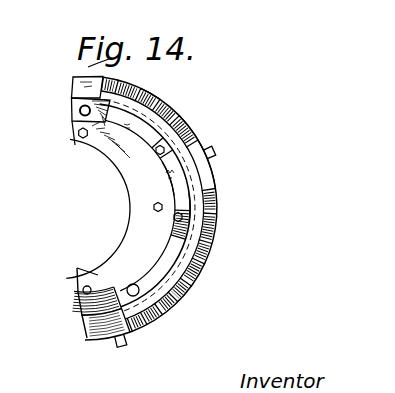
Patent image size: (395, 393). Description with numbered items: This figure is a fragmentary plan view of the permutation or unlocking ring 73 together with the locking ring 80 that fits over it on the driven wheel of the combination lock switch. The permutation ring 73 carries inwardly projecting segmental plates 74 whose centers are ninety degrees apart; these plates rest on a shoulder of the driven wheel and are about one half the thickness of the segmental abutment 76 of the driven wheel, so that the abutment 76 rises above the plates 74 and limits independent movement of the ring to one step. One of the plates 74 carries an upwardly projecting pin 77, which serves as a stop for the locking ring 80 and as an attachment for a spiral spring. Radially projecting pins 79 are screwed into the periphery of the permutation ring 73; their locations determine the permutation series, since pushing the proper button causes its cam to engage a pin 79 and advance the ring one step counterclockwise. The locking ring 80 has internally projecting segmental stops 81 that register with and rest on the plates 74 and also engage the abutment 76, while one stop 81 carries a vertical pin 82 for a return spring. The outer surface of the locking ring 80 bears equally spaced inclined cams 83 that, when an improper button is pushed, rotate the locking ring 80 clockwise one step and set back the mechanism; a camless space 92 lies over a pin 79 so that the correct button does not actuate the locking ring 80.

The permutation ring 73 is at (86, 338).
The segmental plates 74 is at (72, 110).
The segmental abutment 76 is at (182, 192).
The pin 77 is at (73, 126).
The pins 79 is at (122, 350).
The locking ring 80 is at (179, 120).
The segmental stops 81 is at (118, 287).
The vertical pin 82 is at (133, 284).
The inclined cams 83 is at (158, 110).
The camless space 92 is at (246, 164).